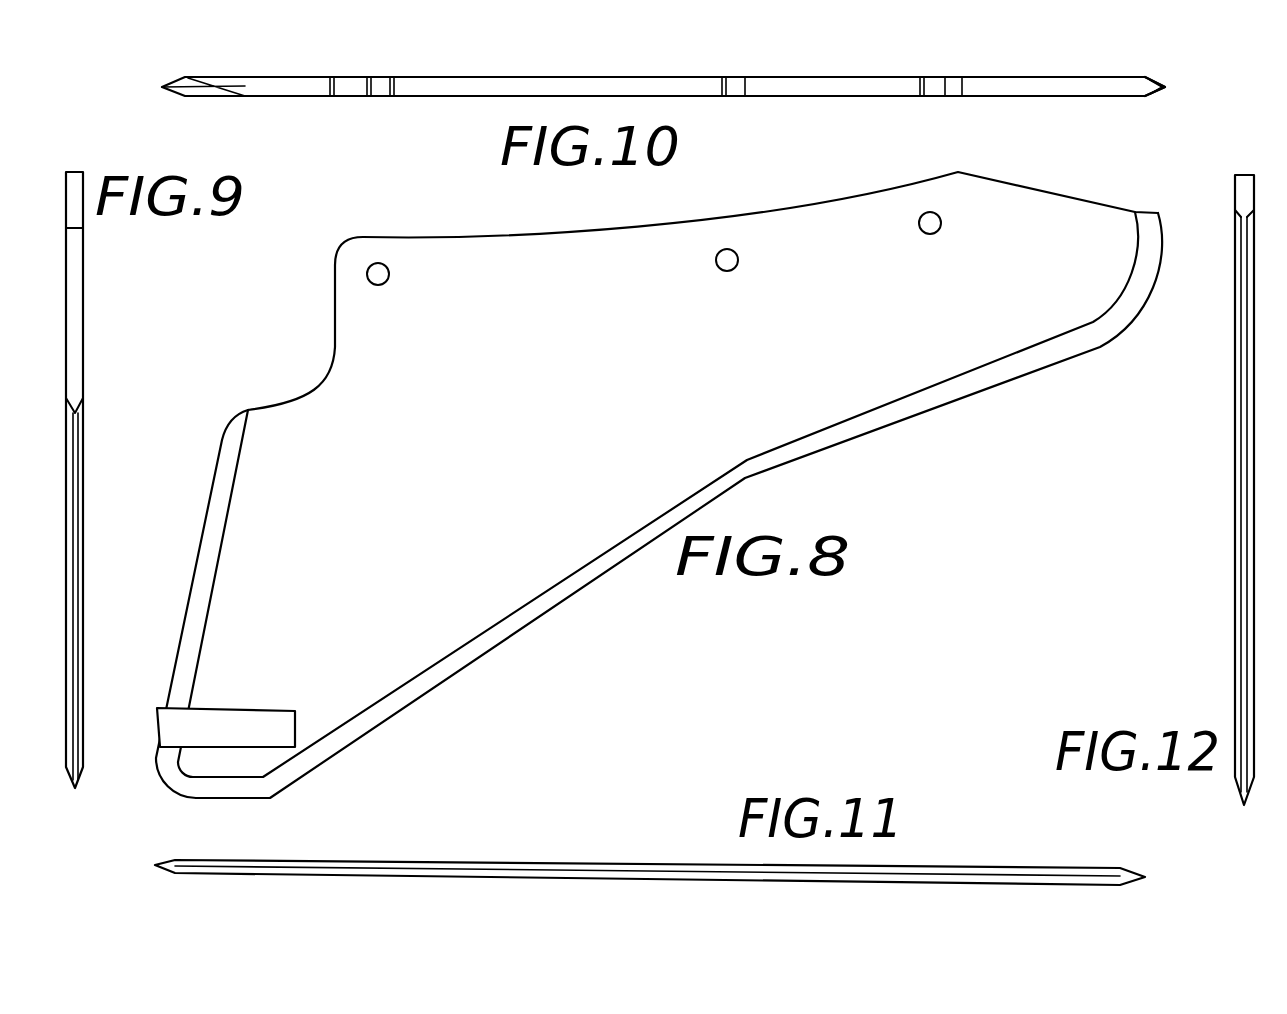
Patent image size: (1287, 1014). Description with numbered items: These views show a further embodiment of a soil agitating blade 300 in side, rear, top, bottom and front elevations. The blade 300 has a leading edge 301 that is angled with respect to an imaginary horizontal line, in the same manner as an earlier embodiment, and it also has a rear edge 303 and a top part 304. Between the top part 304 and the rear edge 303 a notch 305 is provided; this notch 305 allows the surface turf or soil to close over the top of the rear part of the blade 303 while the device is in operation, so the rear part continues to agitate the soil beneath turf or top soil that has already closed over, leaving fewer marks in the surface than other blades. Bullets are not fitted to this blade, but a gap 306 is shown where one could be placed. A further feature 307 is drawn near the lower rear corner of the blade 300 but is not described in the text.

In FIG. 8, the blade 300 is at (483, 653).
In FIG. 9, the blade 300 is at (97, 513).
In FIG. 10, the blade 300 is at (448, 112).
In FIG. 11, the blade 300 is at (695, 843).
In FIG. 12, the blade 300 is at (1210, 462).
In FIG. 8, the leading edge 301 is at (943, 393).
In FIG. 10, the leading edge 301 is at (1173, 88).
In FIG. 11, the leading edge 301 is at (488, 867).
In FIG. 12, the leading edge 301 is at (1240, 607).
In FIG. 8, the rear edge 303 is at (190, 598).
In FIG. 9, the rear edge 303 is at (113, 577).
In FIG. 8, the top part 304 is at (792, 222).
In FIG. 10, the top part 304 is at (838, 85).
In FIG. 8, the notch 305 is at (286, 352).
In FIG. 8, the gap 306 is at (202, 735).
In FIG. 8, the loop end 307 is at (266, 786).